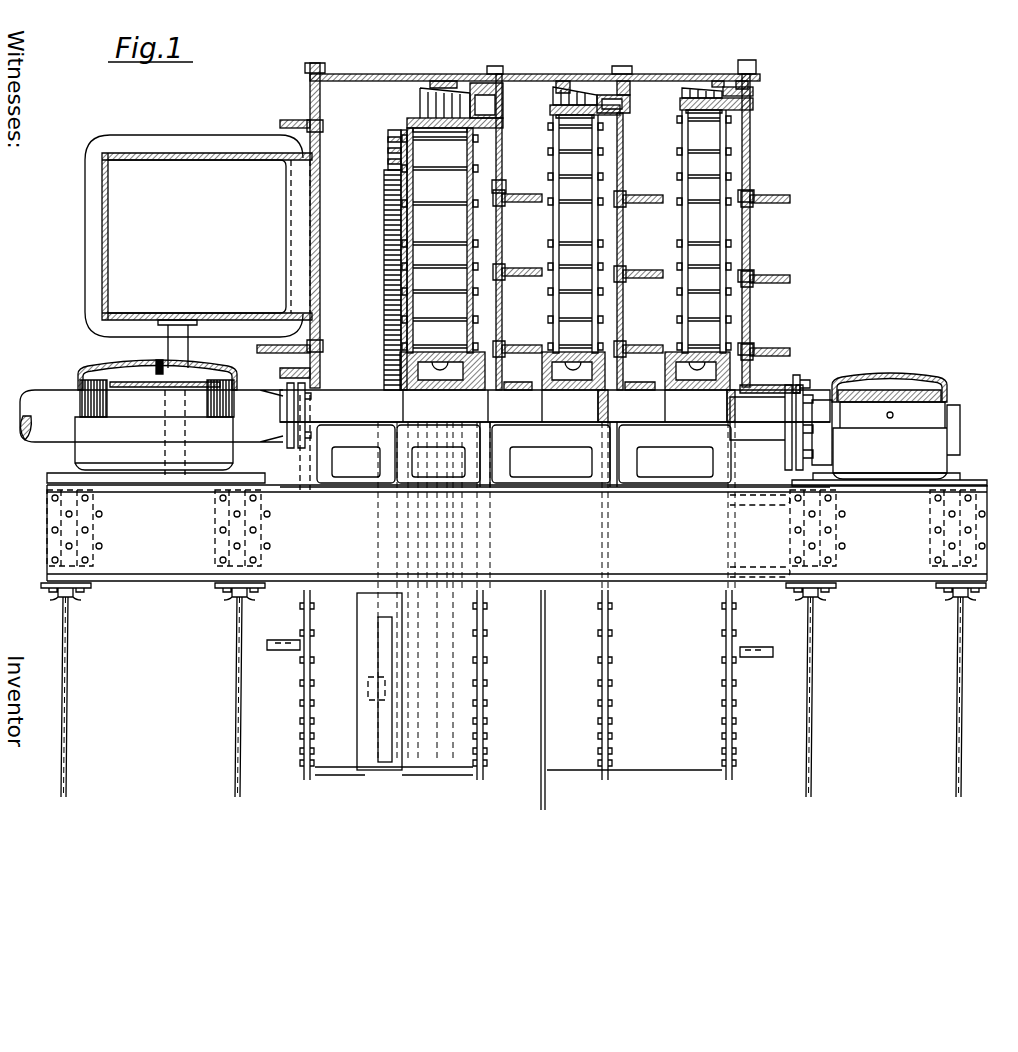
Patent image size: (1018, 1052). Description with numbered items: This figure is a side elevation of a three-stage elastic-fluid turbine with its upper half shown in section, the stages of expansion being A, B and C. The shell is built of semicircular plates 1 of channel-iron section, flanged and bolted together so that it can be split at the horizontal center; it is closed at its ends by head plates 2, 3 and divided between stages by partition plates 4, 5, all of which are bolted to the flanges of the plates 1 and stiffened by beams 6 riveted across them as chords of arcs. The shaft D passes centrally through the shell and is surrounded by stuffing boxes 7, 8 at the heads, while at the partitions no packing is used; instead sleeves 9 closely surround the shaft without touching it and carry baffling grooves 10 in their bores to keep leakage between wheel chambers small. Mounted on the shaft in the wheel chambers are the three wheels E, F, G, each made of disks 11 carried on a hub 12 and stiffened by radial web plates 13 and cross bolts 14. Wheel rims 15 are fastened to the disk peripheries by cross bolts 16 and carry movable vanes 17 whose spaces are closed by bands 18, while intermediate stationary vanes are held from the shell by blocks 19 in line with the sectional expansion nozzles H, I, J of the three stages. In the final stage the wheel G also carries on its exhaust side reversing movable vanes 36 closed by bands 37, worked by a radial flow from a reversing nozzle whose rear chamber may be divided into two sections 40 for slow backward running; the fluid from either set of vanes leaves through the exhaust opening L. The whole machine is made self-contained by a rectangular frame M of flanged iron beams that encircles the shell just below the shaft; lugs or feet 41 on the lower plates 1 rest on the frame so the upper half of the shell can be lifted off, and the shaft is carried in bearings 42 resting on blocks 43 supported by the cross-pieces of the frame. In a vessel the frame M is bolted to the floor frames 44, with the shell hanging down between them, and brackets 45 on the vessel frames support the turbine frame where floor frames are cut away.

The semicircular plates 1 is at (535, 413).
The head plate 2 is at (750, 145).
The head plate 3 is at (310, 225).
The partition plate 4 is at (627, 251).
The partition plate 5 is at (504, 168).
The beams 6 is at (531, 232).
The stuffing box 7 is at (775, 377).
The stuffing box 8 is at (299, 365).
The sleeves 9 is at (506, 390).
The baffling grooves 10 is at (555, 406).
The disks 11 is at (501, 303).
The hub 12 is at (565, 387).
The radial web plates 13 is at (560, 209).
The cross bolts 14 is at (764, 254).
The wheel rims 15 is at (407, 120).
The cross bolts 16 is at (445, 140).
The movable vanes 17 is at (428, 95).
The bands 18 is at (423, 80).
The blocks 19 is at (468, 80).
The movable vanes 36 is at (384, 210).
The bands 37 is at (388, 166).
The sections 40 is at (395, 760).
The lugs or feet 41 is at (560, 486).
The bearings 42 is at (517, 410).
The blocks 43 is at (80, 475).
The floor frames 44 is at (235, 658).
The brackets 45 is at (548, 620).
The first stage of expansion A is at (682, 48).
The second stage of expansion B is at (555, 48).
The third stage of expansion C is at (421, 52).
The shaft D is at (812, 395).
The wheel E is at (700, 176).
The wheel F is at (572, 183).
The wheel G is at (444, 183).
The sectional nozzle H is at (756, 89).
The sectional nozzle I is at (618, 103).
The sectional nozzle J is at (492, 106).
The exhaust opening L is at (210, 238).
The rectangular frame M is at (517, 533).